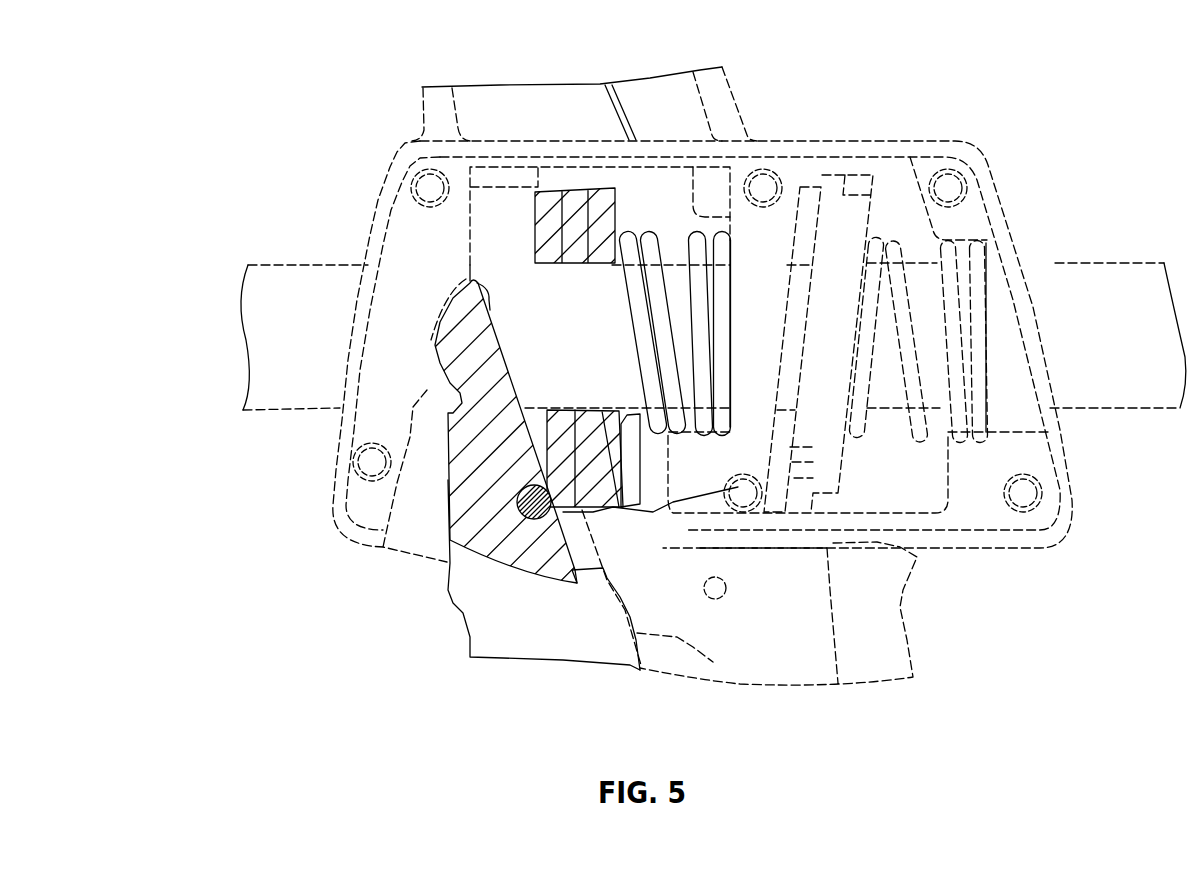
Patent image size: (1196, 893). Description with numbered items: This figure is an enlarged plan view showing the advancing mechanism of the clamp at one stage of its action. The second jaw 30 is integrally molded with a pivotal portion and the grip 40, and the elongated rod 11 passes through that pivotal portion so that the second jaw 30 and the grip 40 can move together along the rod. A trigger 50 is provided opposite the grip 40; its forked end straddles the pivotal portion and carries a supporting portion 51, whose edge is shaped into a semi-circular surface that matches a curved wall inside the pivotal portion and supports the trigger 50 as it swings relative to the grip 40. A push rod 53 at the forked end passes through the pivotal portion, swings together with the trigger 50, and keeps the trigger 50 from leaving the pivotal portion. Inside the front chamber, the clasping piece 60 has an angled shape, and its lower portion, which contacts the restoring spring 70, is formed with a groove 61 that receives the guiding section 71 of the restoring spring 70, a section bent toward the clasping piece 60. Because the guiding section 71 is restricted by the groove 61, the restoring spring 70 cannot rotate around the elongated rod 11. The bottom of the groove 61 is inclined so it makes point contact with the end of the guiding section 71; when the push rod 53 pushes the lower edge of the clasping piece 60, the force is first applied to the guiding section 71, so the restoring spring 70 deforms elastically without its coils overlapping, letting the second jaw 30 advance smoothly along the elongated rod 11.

The elongated rod 11 is at (1098, 292).
The second jaw 30 is at (713, 108).
The grip 40 is at (878, 632).
The trigger 50 is at (545, 623).
The supporting portion 51 is at (460, 340).
The push rod 53 is at (530, 510).
The clasping piece 60 is at (597, 217).
The groove 61 is at (617, 410).
The restoring spring 70 is at (700, 252).
The guiding section 71 is at (628, 493).